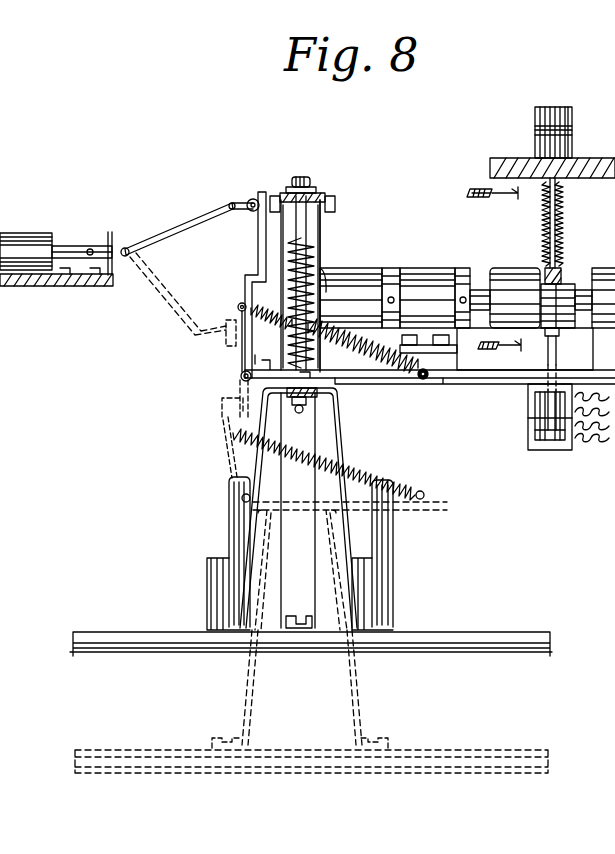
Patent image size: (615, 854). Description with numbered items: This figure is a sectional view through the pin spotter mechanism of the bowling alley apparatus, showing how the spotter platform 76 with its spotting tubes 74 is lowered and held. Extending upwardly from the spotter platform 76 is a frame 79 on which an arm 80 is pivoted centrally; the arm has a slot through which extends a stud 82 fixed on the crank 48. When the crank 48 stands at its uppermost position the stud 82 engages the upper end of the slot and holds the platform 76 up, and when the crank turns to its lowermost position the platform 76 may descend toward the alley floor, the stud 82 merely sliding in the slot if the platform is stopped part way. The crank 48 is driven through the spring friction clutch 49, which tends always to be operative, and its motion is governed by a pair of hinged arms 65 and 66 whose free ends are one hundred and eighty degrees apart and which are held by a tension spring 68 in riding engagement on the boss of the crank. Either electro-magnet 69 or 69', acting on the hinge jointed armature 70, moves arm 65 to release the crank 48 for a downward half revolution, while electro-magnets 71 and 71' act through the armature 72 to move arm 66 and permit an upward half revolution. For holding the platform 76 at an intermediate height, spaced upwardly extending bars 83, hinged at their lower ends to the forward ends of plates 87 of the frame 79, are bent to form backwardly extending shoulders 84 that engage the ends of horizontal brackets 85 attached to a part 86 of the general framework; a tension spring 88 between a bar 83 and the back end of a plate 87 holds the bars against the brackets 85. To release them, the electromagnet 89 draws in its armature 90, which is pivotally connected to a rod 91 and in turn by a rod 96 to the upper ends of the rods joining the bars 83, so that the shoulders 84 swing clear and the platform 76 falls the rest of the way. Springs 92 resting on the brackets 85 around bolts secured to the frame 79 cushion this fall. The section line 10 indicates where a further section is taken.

The section line 10 is at (494, 276).
The crank 48 is at (322, 232).
The clutch 49 is at (520, 270).
The hinged arm 65 is at (563, 286).
The hinged arm 66 is at (560, 332).
The tension spring 68 is at (566, 200).
The electro-magnet 69 is at (552, 135).
The electro-magnet 69' is at (570, 134).
The hinge jointed armature 70 is at (557, 222).
The electro-magnet 71 is at (549, 417).
The electro-magnet 71' is at (527, 437).
The armature 72 is at (557, 352).
The spotting tube 74 is at (207, 571).
The spotter platform 76 is at (118, 634).
The frame 79 is at (317, 441).
The arm 80 is at (281, 295).
The stud 82 is at (285, 196).
The bar 83 is at (258, 252).
The shoulder 84 is at (250, 290).
The horizontal bracket 85 is at (264, 362).
The part of the general framework 86 is at (488, 378).
The plate 87 is at (392, 380).
The tension spring 88 is at (356, 345).
The electromagnet 89 is at (33, 236).
The armature 90 is at (64, 246).
The rod 91 is at (178, 236).
The spring 92 is at (314, 262).
The rod 96 is at (250, 200).